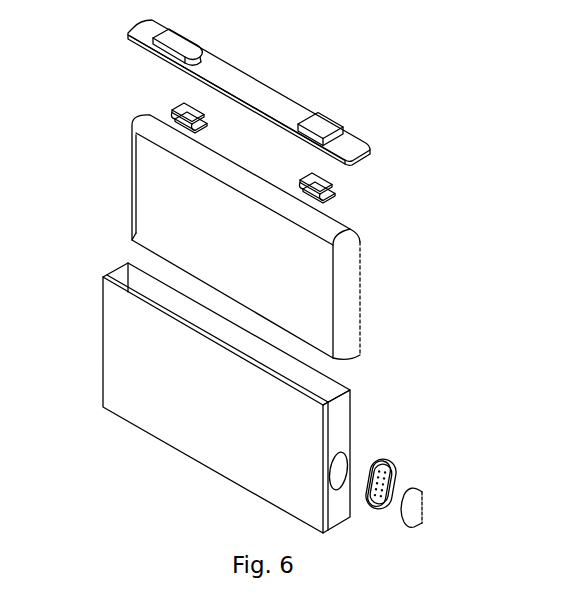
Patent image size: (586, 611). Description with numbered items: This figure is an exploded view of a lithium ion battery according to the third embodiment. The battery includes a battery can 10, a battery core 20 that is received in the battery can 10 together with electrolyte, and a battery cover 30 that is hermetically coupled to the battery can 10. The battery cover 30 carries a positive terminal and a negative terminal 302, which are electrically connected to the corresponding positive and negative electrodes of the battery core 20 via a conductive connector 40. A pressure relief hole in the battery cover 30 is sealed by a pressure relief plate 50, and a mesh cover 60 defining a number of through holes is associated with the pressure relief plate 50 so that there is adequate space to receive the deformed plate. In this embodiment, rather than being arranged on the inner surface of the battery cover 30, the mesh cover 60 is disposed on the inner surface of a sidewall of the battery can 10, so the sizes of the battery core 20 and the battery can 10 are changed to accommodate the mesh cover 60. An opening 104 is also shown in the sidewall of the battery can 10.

The battery can 10 is at (110, 312).
The battery core 20 is at (353, 293).
The battery cover 30 is at (293, 110).
The negative terminal 302 is at (330, 128).
The conductive connector 40 is at (333, 186).
The opening 104 is at (346, 450).
The mesh cover 60 is at (393, 472).
The pressure relief plate 50 is at (422, 493).